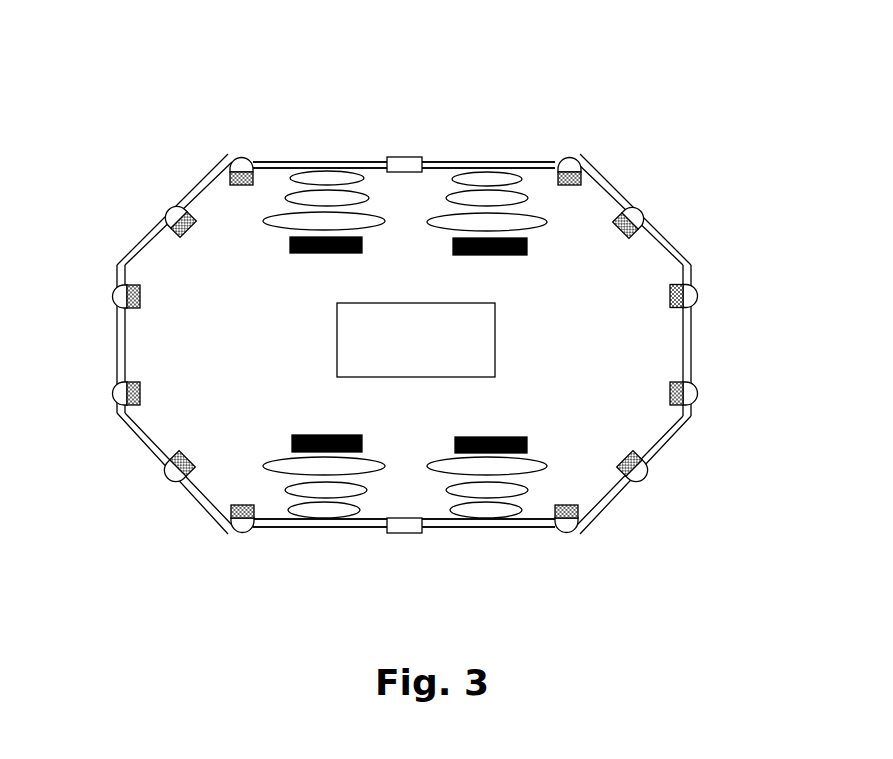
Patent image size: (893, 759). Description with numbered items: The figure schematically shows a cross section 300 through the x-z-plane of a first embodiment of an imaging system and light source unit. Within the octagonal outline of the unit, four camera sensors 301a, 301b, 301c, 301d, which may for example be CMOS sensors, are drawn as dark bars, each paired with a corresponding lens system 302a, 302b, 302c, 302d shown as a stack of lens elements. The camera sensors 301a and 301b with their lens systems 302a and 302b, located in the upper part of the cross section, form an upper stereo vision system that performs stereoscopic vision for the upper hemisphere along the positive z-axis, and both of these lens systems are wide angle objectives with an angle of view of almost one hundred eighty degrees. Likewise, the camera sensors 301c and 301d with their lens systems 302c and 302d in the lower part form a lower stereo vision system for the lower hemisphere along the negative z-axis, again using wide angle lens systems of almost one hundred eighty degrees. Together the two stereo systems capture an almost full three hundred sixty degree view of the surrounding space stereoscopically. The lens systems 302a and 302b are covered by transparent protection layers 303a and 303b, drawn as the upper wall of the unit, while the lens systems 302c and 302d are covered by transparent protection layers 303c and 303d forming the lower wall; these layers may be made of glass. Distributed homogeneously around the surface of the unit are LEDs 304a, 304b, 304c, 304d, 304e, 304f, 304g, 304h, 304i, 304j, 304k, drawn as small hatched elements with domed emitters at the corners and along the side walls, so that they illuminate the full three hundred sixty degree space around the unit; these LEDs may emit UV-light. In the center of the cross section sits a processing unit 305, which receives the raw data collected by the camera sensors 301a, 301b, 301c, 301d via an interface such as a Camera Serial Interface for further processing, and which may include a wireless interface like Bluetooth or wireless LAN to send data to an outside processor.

The cross section 300 is at (500, 60).
The camera sensor 301a is at (307, 254).
The camera sensor 301b is at (495, 256).
The camera sensor 301c is at (510, 436).
The camera sensor 301d is at (289, 433).
The lens system 302a is at (263, 236).
The lens system 302b is at (554, 238).
The lens system 302c is at (551, 457).
The lens system 302d is at (251, 453).
The transparent protection layer 303a is at (350, 161).
The transparent protection layer 303b is at (526, 161).
The transparent protection layer 303c is at (521, 529).
The transparent protection layer 303d is at (361, 529).
The LED 304a is at (246, 158).
The LED 304b is at (573, 160).
The LED 304c is at (639, 214).
The LED 304d is at (697, 293).
The LED 304e is at (697, 390).
The LED 304f is at (646, 476).
The LED 304g is at (570, 532).
The LED 304h is at (168, 482).
The LED 304i is at (116, 399).
The LED 304j is at (116, 297).
The LED 304k is at (178, 210).
The processing unit 305 is at (416, 340).